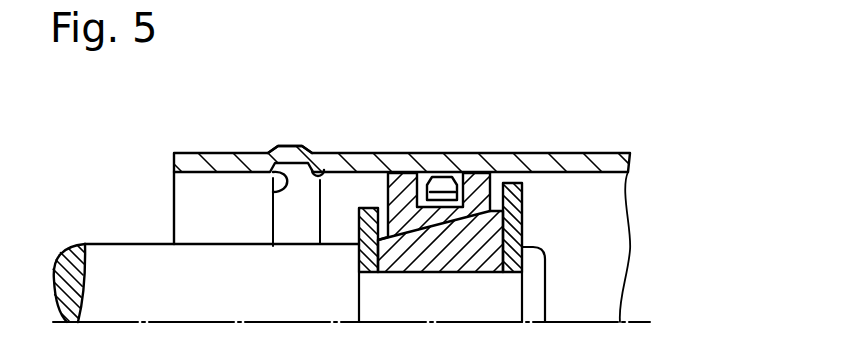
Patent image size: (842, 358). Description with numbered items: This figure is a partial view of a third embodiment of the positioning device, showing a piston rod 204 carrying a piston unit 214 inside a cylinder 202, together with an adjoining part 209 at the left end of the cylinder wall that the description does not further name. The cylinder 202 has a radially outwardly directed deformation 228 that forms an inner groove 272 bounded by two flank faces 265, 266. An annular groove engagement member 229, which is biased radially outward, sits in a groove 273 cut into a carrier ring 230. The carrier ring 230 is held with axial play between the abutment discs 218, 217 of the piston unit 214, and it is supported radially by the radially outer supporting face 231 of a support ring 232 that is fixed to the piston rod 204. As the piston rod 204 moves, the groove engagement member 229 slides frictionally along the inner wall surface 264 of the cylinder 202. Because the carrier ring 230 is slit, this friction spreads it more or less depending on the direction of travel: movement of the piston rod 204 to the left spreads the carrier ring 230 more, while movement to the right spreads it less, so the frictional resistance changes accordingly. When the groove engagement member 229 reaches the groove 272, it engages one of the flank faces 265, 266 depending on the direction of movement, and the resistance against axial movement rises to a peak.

The cylinder 202 is at (245, 153).
The piston rod 204 is at (98, 257).
The housing wall 209 is at (207, 163).
The piston unit 214 is at (530, 235).
The abutment disc 217 is at (508, 197).
The abutment disc 218 is at (362, 260).
The radially outwardly directed deformation 228 is at (294, 146).
The annular groove engagement member 229 is at (443, 177).
The carrier ring 230 is at (484, 173).
The radially outer supporting face 231 is at (413, 227).
The support ring 232 is at (449, 260).
The inner wall surface 264 is at (612, 172).
The flank face 265 is at (276, 193).
The flank face 266 is at (320, 170).
The groove 272 is at (298, 170).
The groove 273 is at (461, 185).